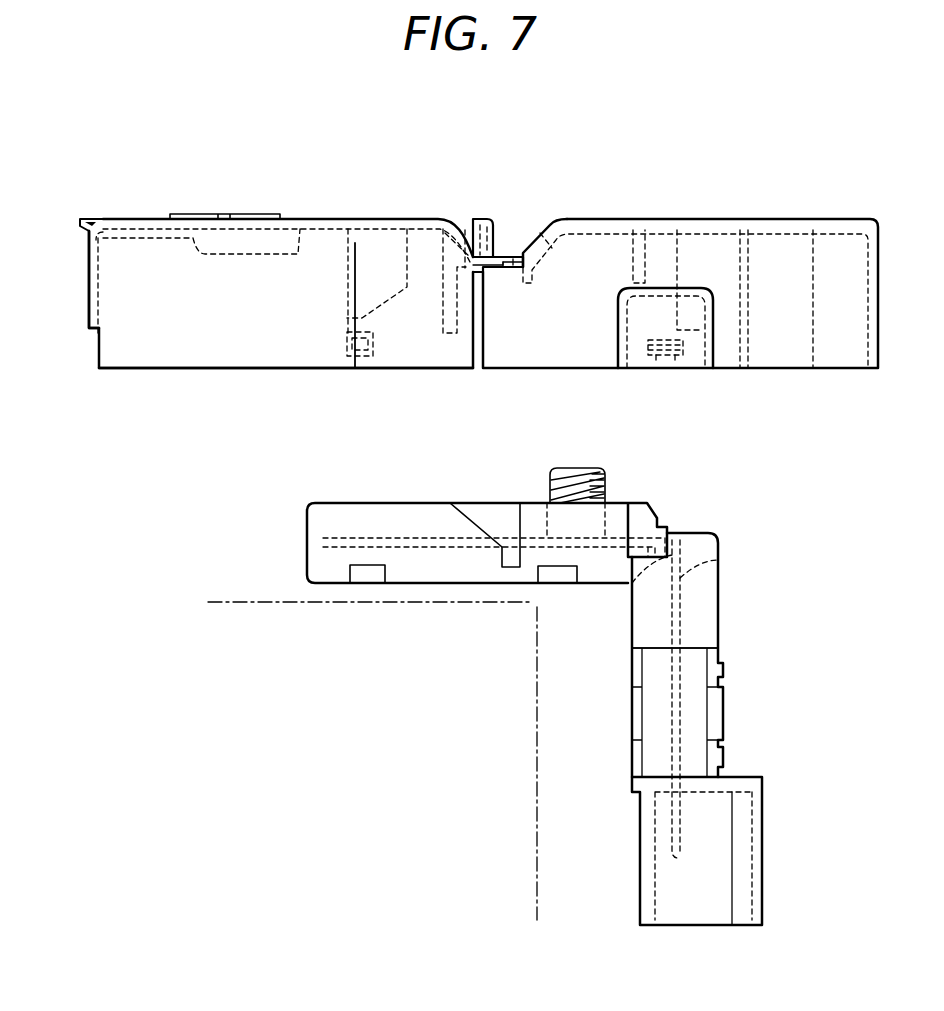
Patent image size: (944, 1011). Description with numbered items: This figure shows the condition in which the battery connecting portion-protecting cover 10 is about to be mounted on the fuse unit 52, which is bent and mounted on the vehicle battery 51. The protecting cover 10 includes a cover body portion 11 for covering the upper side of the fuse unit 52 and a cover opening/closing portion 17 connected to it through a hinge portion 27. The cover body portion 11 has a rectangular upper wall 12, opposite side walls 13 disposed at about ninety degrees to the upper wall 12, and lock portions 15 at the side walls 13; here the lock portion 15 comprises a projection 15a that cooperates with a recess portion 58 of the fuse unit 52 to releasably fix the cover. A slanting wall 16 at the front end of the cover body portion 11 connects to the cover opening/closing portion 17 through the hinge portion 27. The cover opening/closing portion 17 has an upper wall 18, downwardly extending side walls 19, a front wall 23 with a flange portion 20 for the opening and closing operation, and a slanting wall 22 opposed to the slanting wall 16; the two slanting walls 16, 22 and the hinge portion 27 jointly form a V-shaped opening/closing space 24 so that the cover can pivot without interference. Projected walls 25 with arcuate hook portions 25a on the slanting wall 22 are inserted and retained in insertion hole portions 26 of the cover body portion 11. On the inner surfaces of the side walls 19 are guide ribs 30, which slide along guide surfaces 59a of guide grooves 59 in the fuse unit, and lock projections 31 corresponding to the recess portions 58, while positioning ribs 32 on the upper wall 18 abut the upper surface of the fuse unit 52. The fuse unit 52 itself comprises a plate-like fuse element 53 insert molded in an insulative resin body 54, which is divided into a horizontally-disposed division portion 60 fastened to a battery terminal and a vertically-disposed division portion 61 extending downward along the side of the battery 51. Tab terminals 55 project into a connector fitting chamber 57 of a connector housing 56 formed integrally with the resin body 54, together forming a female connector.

The protecting cover 10 is at (398, 145).
The cover body portion 11 is at (760, 219).
The upper wall 12 is at (830, 218).
The side walls 13 is at (795, 348).
The lock portions 15 is at (683, 355).
The projection 15a is at (660, 358).
The slanting wall 16 is at (552, 245).
The cover opening/closing portion 17 is at (233, 214).
The upper wall 18 is at (137, 218).
The side walls 19 is at (158, 340).
The flange portion 20 is at (83, 218).
The slanting wall 22 is at (462, 245).
The front wall 23 is at (89, 287).
The opening/closing space 24 is at (517, 245).
The projected walls 25 is at (470, 220).
The hook portion 25a is at (490, 228).
The insertion hole portions 26 is at (540, 233).
The hinge portion 27 is at (513, 268).
The guide ribs 30 is at (450, 335).
The lock projections 31 is at (348, 342).
The positioning ribs 32 is at (350, 292).
The battery 51 is at (235, 600).
The fuse unit 52 is at (719, 613).
The fuse element 53 is at (718, 560).
The resin body 54 is at (370, 520).
The tab terminals 55 is at (680, 853).
The connector housing 56 is at (762, 856).
The connector fitting chamber 57 is at (710, 895).
The recess portions 58 is at (560, 577).
The guide grooves 59 is at (507, 515).
The guide surface 59a is at (475, 520).
The horizontally-disposed division portion 60 is at (330, 510).
The vertically-disposed division portion 61 is at (706, 637).